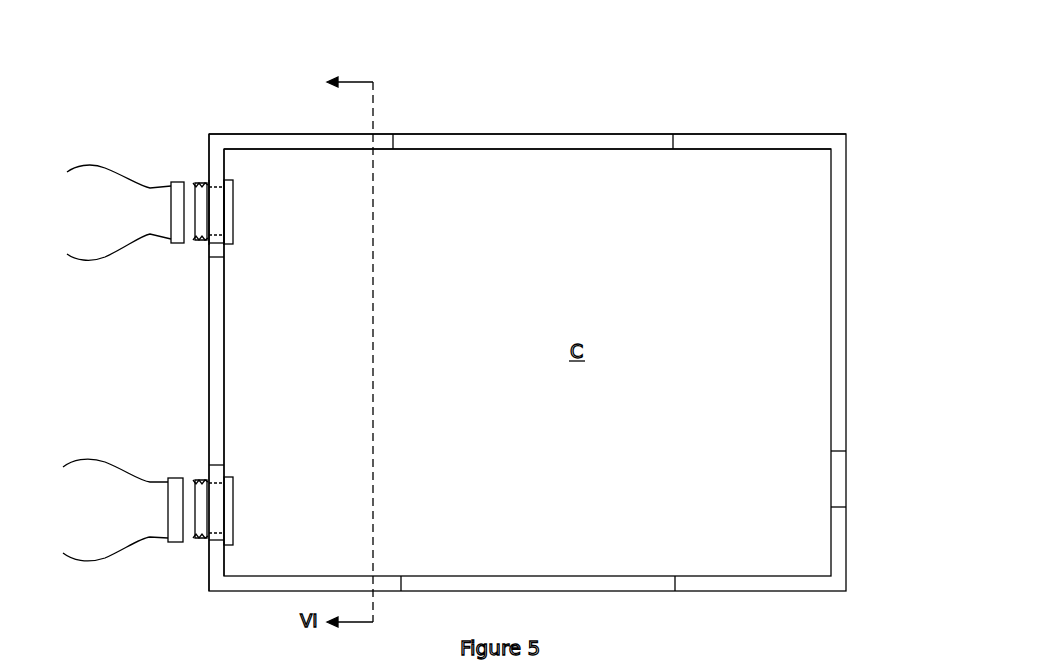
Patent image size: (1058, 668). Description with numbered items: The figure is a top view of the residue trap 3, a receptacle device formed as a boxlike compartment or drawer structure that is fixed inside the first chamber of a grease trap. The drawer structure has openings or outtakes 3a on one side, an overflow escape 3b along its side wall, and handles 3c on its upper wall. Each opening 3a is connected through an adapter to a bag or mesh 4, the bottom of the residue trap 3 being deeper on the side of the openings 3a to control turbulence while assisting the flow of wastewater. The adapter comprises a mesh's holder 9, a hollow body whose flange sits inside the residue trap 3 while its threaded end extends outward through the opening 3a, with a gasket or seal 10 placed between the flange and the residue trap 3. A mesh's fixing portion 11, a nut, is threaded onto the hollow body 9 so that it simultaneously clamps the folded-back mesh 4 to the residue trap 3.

The residue trap 3 is at (852, 274).
The opening 3a is at (260, 212).
The overflow escape 3b is at (230, 368).
The handles 3c is at (504, 136).
The mesh 4 is at (108, 220).
The mesh's holder 9 is at (231, 185).
The gasket 10 is at (227, 472).
The mesh's fixing portion 11 is at (178, 174).